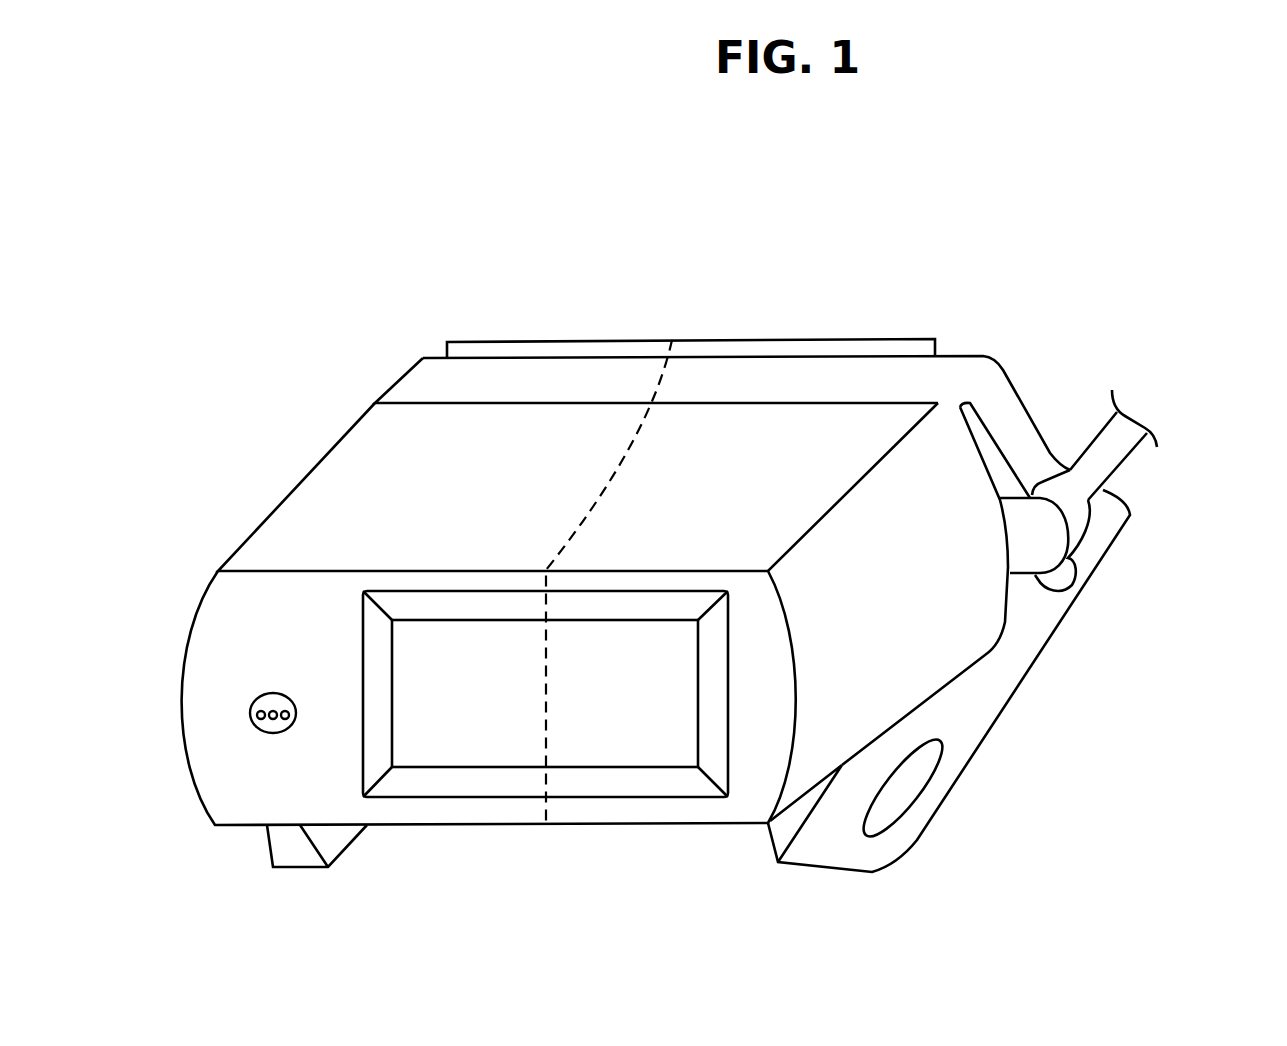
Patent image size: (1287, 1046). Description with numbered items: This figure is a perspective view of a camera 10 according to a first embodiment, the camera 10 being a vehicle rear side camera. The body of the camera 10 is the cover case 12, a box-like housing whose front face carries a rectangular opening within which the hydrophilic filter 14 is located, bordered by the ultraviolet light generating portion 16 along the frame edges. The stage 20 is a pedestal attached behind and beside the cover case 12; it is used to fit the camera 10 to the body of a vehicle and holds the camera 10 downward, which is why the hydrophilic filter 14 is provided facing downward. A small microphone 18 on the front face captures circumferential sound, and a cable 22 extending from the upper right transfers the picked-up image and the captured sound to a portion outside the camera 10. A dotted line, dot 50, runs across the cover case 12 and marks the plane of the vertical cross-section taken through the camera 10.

The camera 10 is at (1178, 230).
The cover case 12 is at (322, 487).
The hydrophilic filter 14 is at (503, 733).
The ultraviolet light generating portion 16 is at (438, 778).
The microphone 18 is at (273, 692).
The stage 20 is at (1005, 690).
The cable 22 is at (1107, 458).
The dot 50 is at (605, 483).